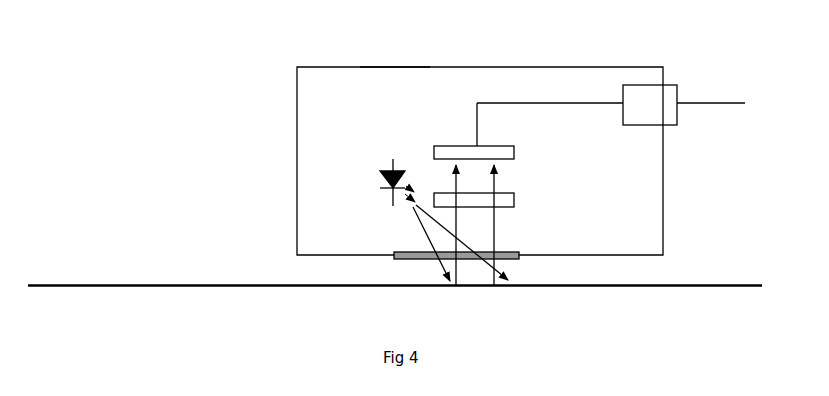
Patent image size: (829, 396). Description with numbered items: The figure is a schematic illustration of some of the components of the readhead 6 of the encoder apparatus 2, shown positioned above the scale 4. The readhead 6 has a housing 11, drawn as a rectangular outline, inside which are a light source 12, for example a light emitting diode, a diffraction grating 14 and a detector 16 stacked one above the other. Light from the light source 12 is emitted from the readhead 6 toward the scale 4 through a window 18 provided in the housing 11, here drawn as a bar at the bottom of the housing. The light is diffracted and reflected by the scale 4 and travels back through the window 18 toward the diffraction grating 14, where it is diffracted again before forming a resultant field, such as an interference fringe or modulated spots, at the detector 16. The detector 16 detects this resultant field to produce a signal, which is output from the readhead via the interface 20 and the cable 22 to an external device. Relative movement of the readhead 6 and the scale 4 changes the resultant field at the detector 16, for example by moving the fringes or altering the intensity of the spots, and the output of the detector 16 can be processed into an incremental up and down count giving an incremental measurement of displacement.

The sensor system 2 is at (187, 164).
The scale 4 is at (130, 282).
The readhead 6 is at (291, 100).
The housing 11 is at (394, 67).
The light source 12 is at (383, 182).
The diffraction grating 14 is at (526, 200).
The detector 16 is at (526, 152).
The window 18 is at (396, 246).
The interface 20 is at (577, 115).
The cable 22 is at (721, 114).